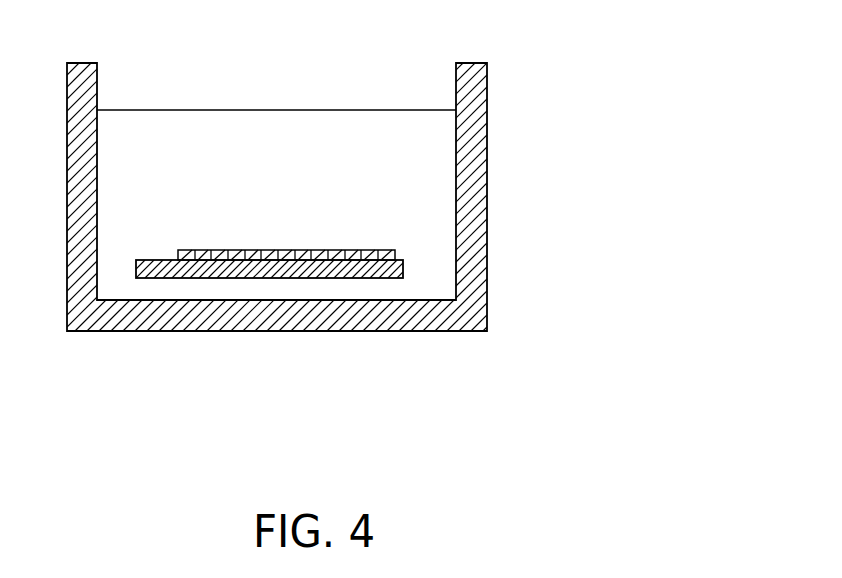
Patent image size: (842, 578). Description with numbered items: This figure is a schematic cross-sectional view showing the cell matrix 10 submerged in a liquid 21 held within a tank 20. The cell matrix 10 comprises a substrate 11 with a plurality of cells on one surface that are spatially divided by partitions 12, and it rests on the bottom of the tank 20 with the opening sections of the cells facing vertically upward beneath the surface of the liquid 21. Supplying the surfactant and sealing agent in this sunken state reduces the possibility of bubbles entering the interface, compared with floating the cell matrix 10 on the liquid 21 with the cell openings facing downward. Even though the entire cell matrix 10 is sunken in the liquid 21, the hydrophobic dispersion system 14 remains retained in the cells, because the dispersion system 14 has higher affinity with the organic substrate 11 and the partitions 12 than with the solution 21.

The cell matrix 10 is at (275, 284).
The substrate 11 is at (272, 278).
The partition 12 is at (225, 250).
The dispersion system 14 is at (310, 205).
The tank 20 is at (488, 196).
The liquid 21 is at (438, 233).